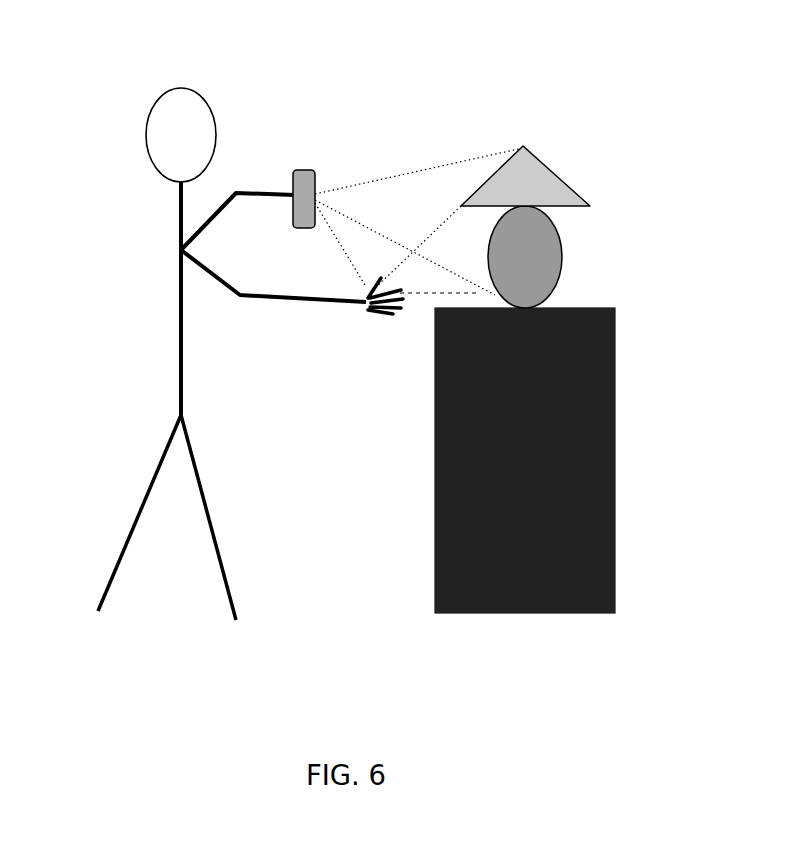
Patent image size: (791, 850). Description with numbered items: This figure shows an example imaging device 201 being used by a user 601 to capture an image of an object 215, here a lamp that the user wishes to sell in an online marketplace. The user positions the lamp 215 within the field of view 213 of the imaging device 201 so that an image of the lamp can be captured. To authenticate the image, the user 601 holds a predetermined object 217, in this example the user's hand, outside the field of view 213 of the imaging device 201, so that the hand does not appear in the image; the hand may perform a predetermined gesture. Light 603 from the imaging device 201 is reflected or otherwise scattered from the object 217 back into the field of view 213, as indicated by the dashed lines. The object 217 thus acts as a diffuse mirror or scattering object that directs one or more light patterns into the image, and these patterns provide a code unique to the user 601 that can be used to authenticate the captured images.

The user 601 is at (172, 275).
The imaging device 201 is at (289, 162).
The field of view 213 is at (405, 165).
The light 603 is at (433, 220).
The object 215 is at (552, 244).
The predetermined object 217 is at (363, 313).